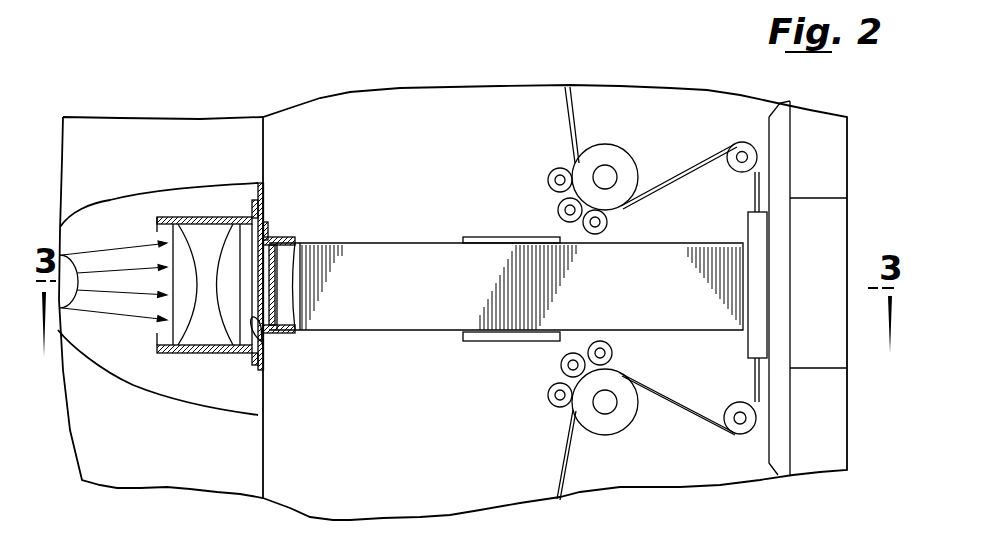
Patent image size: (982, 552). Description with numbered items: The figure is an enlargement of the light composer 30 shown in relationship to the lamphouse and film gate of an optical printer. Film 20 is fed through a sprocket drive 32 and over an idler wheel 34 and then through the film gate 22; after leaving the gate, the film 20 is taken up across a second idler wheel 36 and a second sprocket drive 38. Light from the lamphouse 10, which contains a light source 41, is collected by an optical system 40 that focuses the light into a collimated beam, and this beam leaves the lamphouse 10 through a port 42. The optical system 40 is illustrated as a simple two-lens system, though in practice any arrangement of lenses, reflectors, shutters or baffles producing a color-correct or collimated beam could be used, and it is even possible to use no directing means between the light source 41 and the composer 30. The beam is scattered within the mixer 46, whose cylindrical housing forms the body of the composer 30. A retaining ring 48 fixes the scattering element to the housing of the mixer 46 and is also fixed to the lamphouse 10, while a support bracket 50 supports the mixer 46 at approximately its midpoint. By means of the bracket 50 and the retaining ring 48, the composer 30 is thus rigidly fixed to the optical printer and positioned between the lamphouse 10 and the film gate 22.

The lamphouse 10 is at (200, 117).
The film 20 is at (683, 167).
The film gate 22 is at (758, 240).
The composer 30 is at (385, 236).
The sprocket drive 32 is at (623, 144).
The idler wheel 34 is at (740, 142).
The idler wheel 36 is at (738, 433).
The second sprocket drive 38 is at (613, 428).
The optical system 40 is at (200, 353).
The light source 41 is at (63, 255).
The port 42 is at (263, 357).
The mixer 46 is at (408, 313).
The retaining ring 48 is at (268, 224).
The support bracket 50 is at (498, 237).